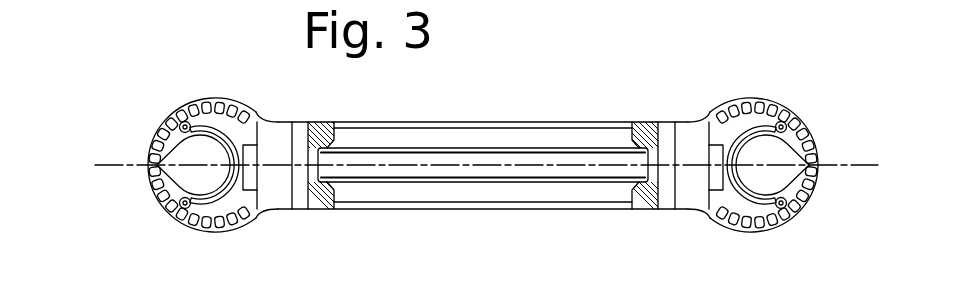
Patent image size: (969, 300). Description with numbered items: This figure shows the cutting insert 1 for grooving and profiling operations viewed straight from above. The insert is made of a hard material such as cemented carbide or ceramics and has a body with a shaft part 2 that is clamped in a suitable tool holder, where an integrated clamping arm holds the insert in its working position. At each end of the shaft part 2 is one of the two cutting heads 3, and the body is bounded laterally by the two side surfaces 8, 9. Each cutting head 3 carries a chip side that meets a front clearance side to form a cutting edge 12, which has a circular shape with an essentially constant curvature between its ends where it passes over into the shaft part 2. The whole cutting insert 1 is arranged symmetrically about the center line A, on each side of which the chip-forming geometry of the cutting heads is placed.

The cutting insert 1 is at (494, 120).
The shaft part 2 is at (439, 212).
The cutting heads 3 is at (185, 98).
The side surface 8 is at (612, 122).
The side surface 9 is at (588, 210).
The cutting edge 12 is at (177, 122).
The center line A is at (843, 167).